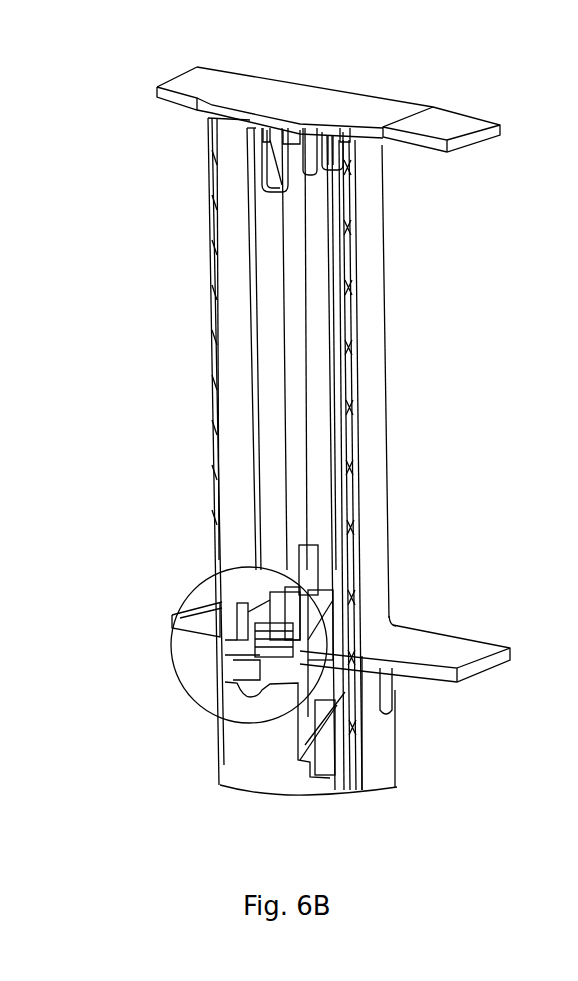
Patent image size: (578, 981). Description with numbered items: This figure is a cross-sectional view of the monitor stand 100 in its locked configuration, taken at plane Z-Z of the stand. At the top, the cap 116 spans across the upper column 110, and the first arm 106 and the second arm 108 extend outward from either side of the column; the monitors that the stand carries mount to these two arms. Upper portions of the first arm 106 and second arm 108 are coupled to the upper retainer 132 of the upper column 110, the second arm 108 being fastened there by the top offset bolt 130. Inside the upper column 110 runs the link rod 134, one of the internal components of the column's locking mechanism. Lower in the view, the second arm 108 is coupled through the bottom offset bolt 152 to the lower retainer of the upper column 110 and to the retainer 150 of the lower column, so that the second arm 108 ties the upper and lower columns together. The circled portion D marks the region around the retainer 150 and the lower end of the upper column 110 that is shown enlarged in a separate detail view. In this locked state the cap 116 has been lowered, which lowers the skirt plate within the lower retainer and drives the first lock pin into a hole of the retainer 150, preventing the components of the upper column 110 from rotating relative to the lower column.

The monitor stand 100 is at (546, 50).
The first arm 106 is at (168, 98).
The second arm 108 is at (460, 138).
The upper column 110 is at (376, 348).
The cap 116 is at (323, 102).
The top offset bolt 130 is at (308, 157).
The upper retainer 132 is at (240, 128).
The link rod 134 is at (290, 323).
The retainer 150 is at (347, 686).
The bottom offset bolt 152 is at (323, 725).
The portion D is at (183, 683).